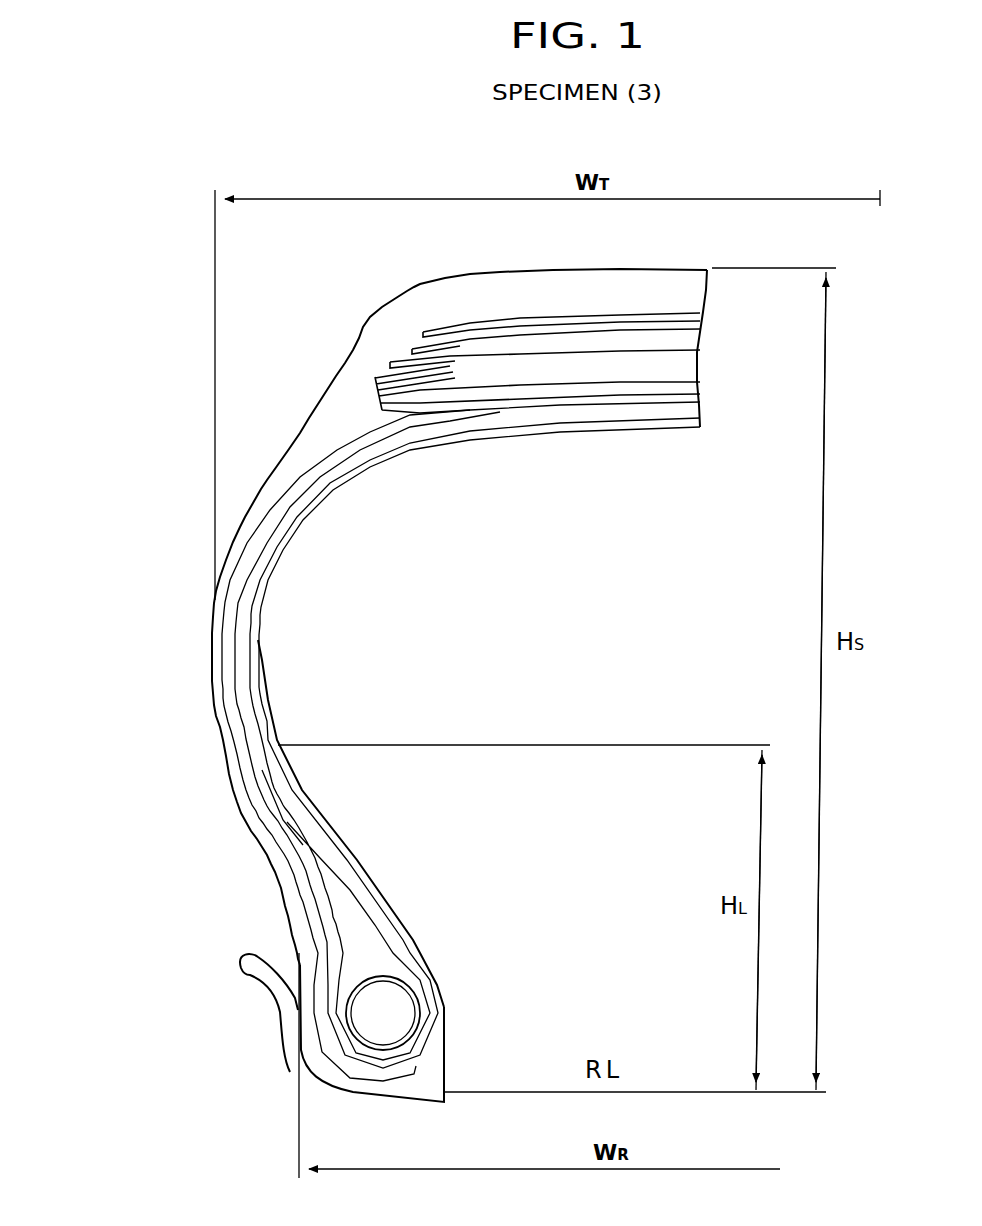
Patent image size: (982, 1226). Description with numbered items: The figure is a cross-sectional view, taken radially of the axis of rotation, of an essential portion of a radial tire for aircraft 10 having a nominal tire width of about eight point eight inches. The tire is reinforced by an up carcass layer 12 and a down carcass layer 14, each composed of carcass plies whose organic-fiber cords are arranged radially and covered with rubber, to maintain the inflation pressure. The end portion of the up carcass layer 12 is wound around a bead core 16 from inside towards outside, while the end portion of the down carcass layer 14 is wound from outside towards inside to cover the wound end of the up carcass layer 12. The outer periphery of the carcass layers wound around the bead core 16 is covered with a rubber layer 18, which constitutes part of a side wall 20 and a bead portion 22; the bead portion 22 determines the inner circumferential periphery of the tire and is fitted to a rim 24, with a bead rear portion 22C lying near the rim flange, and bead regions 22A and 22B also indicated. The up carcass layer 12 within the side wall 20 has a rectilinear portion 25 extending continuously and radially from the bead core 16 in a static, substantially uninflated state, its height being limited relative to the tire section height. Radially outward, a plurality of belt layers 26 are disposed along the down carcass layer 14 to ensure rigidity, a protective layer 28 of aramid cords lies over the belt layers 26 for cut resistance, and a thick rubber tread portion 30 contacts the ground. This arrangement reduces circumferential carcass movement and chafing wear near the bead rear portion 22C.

The radial tire for aircraft 10 is at (150, 405).
The up carcass layer 12 is at (250, 725).
The down carcass layer 14 is at (280, 832).
The bead core 16 is at (393, 1007).
The rubber layer 18 is at (290, 885).
The side wall 20 is at (210, 745).
The bead portion 22 is at (351, 1041).
The bead heel 22A is at (325, 1070).
The bead toe 22B is at (434, 1104).
The bead rear portion 22C is at (298, 955).
The rim 24 is at (286, 1032).
The rectilinear portion 25 is at (362, 851).
The belt layers 26 is at (375, 377).
The protective layer 28 is at (423, 331).
The tread portion 30 is at (493, 290).